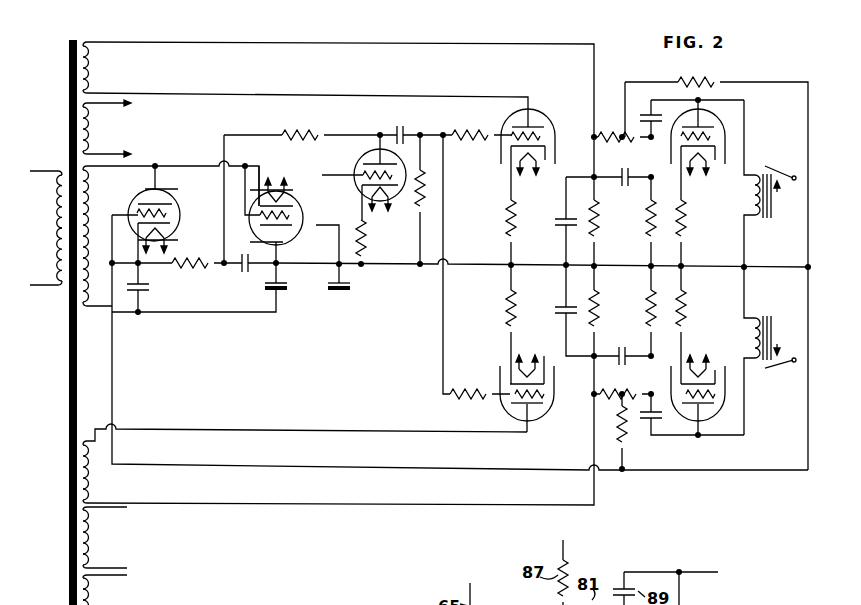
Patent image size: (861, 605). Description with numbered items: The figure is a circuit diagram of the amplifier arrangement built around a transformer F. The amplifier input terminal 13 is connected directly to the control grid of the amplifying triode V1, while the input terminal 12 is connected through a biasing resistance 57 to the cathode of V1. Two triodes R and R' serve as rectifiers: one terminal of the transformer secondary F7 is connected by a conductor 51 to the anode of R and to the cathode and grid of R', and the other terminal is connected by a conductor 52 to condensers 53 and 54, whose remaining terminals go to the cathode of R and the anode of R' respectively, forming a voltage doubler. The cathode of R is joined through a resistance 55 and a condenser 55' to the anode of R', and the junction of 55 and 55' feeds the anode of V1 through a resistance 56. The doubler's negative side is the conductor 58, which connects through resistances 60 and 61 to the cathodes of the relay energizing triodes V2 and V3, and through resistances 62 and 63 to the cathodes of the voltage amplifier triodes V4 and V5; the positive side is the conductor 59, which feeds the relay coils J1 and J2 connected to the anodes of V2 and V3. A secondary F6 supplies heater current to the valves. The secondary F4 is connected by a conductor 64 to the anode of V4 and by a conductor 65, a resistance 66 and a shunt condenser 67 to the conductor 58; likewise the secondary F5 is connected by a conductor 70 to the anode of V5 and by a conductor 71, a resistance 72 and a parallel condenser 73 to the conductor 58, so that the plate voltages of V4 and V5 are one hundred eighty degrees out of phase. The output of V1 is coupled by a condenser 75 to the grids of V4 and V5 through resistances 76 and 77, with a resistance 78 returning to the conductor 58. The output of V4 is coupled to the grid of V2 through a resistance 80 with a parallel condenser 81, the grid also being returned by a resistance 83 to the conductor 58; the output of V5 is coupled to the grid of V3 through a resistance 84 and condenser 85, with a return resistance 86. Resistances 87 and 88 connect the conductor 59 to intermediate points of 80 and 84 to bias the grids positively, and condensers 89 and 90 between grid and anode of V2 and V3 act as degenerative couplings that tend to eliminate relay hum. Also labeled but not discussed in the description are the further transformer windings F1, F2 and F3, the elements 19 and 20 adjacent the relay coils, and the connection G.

The transformer F is at (69, 352).
The primary winding F1 is at (57, 228).
The secondary winding F2 is at (92, 540).
The secondary winding F3 is at (92, 604).
The secondary winding F4 is at (89, 70).
The secondary winding F5 is at (92, 476).
The secondary winding F6 is at (90, 130).
The secondary winding F7 is at (90, 178).
The rectifier triode R is at (146, 214).
The rectifier triode R' is at (277, 214).
The amplifying triode V1 is at (367, 160).
The relay energizing triode V2 is at (719, 116).
The relay energizing triode V3 is at (716, 412).
The voltage amplifier triode V4 is at (547, 116).
The voltage amplifier triode V5 is at (546, 424).
The relay coil J1 is at (750, 200).
The relay coil J2 is at (750, 344).
The relay contact 19 is at (780, 166).
The relay contact 20 is at (781, 371).
The amplifier input terminal 12 is at (338, 233).
The amplifier input terminal 13 is at (325, 174).
The ground G is at (332, 290).
The conductor 51 is at (165, 166).
The conductor 52 is at (194, 313).
The condenser 53 is at (148, 289).
The condenser 54 is at (288, 285).
The resistance 55 is at (173, 252).
The condenser 55' is at (244, 271).
The resistance 56 is at (306, 132).
The biasing resistance 57 is at (370, 238).
The conductor 58 is at (388, 268).
The conductor 59 is at (113, 371).
The resistance 60 is at (687, 222).
The resistance 61 is at (689, 314).
The resistance 62 is at (506, 214).
The resistance 63 is at (506, 310).
The conductor 64 is at (333, 97).
The conductor 65 is at (333, 43).
The resistance 66 is at (599, 222).
The condenser 67 is at (556, 222).
The conductor 70 is at (262, 429).
The conductor 71 is at (264, 503).
The resistance 72 is at (602, 312).
The condenser 73 is at (556, 310).
The condenser 75 is at (398, 125).
The resistance 76 is at (472, 131).
The resistance 77 is at (476, 388).
The resistance 78 is at (417, 208).
The resistance 80 is at (615, 132).
The condenser 81 is at (624, 167).
The resistance 83 is at (646, 228).
The resistance 84 is at (621, 398).
The condenser 85 is at (621, 346).
The resistance 86 is at (647, 307).
The resistance 87 is at (698, 78).
The resistance 88 is at (616, 428).
The condenser 89 is at (644, 110).
The condenser 90 is at (640, 420).